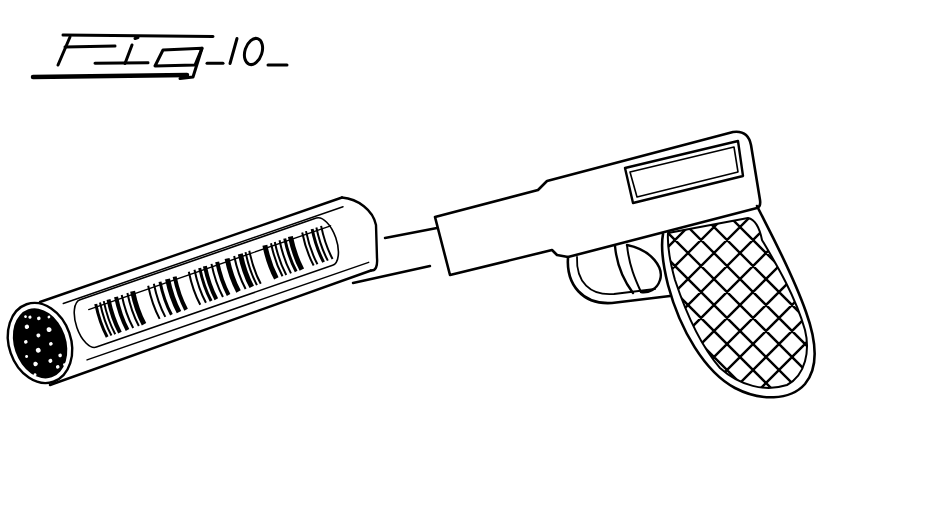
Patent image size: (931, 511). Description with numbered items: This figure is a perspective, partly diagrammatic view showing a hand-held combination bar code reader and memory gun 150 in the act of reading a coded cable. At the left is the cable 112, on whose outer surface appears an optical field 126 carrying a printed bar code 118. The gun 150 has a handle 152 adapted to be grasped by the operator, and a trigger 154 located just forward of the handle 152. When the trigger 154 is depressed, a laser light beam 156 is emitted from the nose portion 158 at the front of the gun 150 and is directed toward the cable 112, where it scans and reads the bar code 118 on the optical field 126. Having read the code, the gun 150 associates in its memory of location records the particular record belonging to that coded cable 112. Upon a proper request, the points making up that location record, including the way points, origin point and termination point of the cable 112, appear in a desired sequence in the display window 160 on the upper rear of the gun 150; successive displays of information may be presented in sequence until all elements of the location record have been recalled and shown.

The cable 112 is at (342, 217).
The bar code 118 is at (236, 235).
The optical field 126 is at (93, 332).
The gun 150 is at (568, 154).
The handle 152 is at (768, 285).
The trigger 154 is at (636, 278).
The laser light beam 156 is at (415, 268).
The nose portion 158 is at (487, 242).
The display window 160 is at (643, 177).